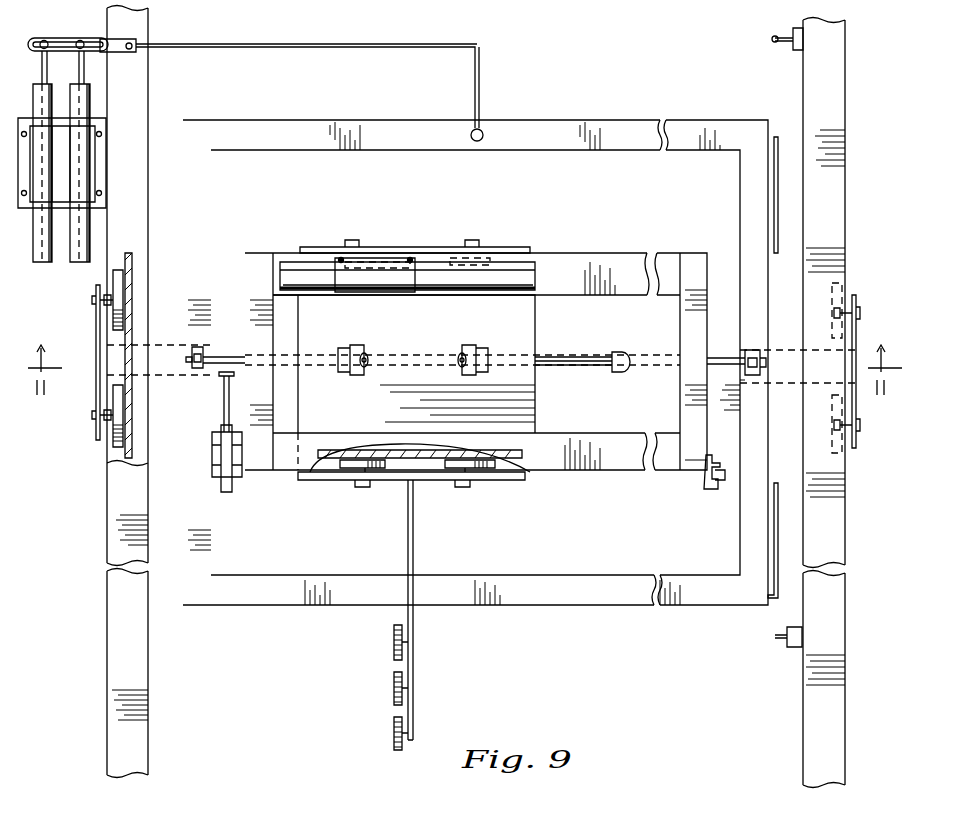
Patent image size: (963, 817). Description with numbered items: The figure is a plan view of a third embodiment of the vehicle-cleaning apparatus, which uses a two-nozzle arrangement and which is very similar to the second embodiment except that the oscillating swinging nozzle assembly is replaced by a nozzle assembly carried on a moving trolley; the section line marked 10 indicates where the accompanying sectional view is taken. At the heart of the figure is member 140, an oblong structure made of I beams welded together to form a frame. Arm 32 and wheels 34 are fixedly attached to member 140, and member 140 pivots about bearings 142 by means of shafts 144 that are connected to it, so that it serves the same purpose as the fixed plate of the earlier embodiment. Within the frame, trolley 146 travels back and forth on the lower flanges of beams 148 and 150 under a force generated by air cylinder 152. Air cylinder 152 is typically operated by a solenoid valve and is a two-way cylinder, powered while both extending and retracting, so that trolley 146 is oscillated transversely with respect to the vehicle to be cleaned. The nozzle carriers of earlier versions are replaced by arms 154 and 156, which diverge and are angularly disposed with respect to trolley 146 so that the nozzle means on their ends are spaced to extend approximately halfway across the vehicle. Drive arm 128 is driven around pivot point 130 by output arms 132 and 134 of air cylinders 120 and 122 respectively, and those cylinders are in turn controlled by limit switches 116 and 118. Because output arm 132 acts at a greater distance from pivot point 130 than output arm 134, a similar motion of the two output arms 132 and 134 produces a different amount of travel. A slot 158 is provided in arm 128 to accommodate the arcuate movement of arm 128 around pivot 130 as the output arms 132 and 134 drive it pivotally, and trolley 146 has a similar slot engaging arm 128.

The section line 10- 10 is at (462, 355).
The arm 32 is at (413, 542).
The wheels 34 is at (394, 728).
The limit switch 116 is at (786, 640).
The limit switch 118 is at (792, 40).
The air cylinder 120 is at (56, 172).
The air cylinder 122 is at (84, 142).
The drive arm 128 is at (118, 40).
The pivot point 130 is at (140, 50).
The output arm 132 is at (52, 62).
The output arm 134 is at (86, 68).
The member 140 is at (616, 476).
The bearings 142 is at (754, 352).
The shafts 144 is at (722, 362).
The trolley 146 is at (316, 490).
The beam 148 is at (630, 272).
The beam 150 is at (620, 456).
The air cylinder 152 is at (501, 272).
The arm 154 is at (357, 352).
The arm 156 is at (598, 360).
The slot 158 is at (64, 38).